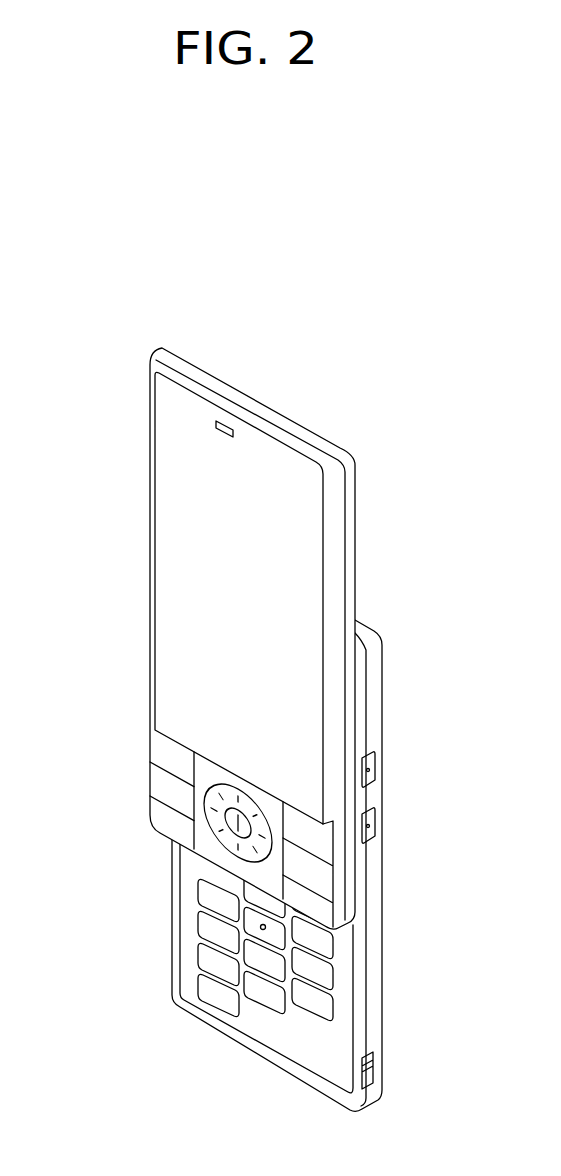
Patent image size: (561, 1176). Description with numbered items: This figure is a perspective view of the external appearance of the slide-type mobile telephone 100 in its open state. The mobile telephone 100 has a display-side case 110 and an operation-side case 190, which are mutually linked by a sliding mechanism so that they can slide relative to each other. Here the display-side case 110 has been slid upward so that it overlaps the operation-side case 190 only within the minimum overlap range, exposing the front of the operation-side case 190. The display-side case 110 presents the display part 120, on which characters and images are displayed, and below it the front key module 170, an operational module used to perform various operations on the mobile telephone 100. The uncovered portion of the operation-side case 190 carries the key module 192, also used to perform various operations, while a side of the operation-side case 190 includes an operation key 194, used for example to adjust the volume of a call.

The mobile telephone 100 is at (266, 693).
The display-side case 110 is at (199, 630).
The display part 120 is at (175, 512).
The front key module 170 is at (175, 786).
The operation-side case 190 is at (266, 865).
The key module 192 is at (212, 920).
The operation key 194 is at (375, 757).